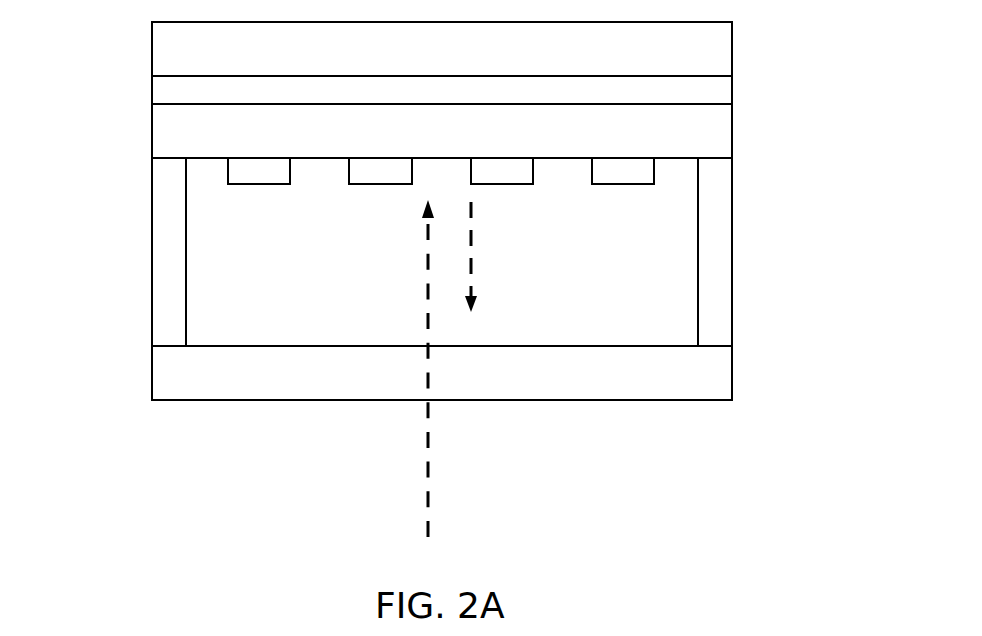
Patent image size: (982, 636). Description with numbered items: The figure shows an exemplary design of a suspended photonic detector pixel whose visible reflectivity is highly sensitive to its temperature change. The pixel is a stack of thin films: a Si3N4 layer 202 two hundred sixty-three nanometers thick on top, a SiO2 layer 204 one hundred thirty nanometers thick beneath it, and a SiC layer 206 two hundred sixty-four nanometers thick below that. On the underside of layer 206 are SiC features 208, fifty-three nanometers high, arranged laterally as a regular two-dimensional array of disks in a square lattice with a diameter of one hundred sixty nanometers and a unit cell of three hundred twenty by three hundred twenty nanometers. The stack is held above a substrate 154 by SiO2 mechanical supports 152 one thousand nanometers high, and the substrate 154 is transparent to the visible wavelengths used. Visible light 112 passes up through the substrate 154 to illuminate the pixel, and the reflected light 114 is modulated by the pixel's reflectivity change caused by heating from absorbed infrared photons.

The visible light 112 is at (428, 482).
The reflected light 114 is at (473, 267).
The mechanical supports 152 is at (165, 297).
The substrate 154 is at (559, 389).
The layer 202 is at (170, 52).
The layer 204 is at (723, 87).
The layer 206 is at (170, 135).
The features 208 is at (678, 182).